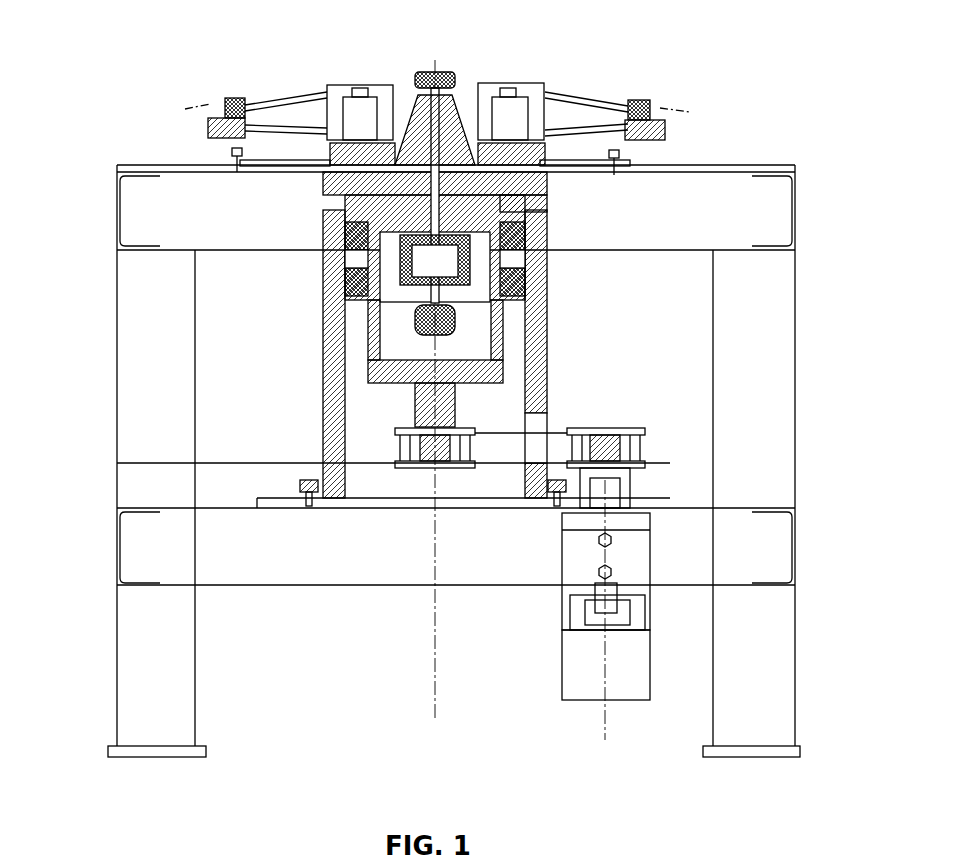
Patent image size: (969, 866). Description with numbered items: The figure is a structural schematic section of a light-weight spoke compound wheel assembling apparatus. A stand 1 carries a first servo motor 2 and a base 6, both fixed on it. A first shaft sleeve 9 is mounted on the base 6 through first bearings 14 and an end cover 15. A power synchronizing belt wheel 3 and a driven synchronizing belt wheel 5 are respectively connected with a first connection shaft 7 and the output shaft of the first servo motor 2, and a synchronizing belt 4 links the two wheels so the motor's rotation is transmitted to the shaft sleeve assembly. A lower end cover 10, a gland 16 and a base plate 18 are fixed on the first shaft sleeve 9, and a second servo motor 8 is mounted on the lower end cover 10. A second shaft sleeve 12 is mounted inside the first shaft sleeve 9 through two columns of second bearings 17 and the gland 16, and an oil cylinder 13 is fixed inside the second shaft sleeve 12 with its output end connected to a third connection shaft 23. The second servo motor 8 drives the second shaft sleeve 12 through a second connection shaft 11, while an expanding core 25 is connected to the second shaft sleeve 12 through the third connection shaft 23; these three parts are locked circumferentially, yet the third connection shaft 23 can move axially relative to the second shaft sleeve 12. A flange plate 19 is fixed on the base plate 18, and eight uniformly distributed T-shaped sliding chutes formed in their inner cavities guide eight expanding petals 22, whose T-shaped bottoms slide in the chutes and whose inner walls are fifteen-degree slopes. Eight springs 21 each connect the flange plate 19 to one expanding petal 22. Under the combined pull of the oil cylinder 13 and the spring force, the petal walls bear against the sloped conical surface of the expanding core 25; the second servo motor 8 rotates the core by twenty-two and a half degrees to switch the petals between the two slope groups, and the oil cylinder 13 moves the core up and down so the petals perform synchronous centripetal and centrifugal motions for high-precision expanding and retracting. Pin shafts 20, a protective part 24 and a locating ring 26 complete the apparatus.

The stand 1 is at (135, 732).
The first servo motor 2 is at (620, 653).
The power synchronizing belt wheel 3 is at (540, 440).
The synchronizing belt 4 is at (585, 478).
The driven synchronizing belt wheel 5 is at (600, 540).
The base 6 is at (547, 357).
The first connection shaft 7 is at (390, 383).
The second servo motor 8 is at (407, 357).
The first shaft sleeve 9 is at (397, 337).
The lower end cover 10 is at (383, 313).
The second connection shaft 11 is at (353, 287).
The second shaft sleeve 12 is at (320, 260).
The oil cylinder 13 is at (547, 313).
The first bearings 14 is at (323, 227).
The end cover 15 is at (307, 205).
The gland 16 is at (547, 268).
The second bearings 17 is at (547, 242).
The base plate 18 is at (303, 180).
The flange plate 19 is at (320, 165).
The pin shafts 20 is at (310, 100).
The springs 21 is at (353, 110).
The expanding petals 22 is at (397, 90).
The third connection shaft 23 is at (545, 212).
The protective part 24 is at (448, 80).
The expanding core 25 is at (467, 110).
The locating ring 26 is at (637, 153).